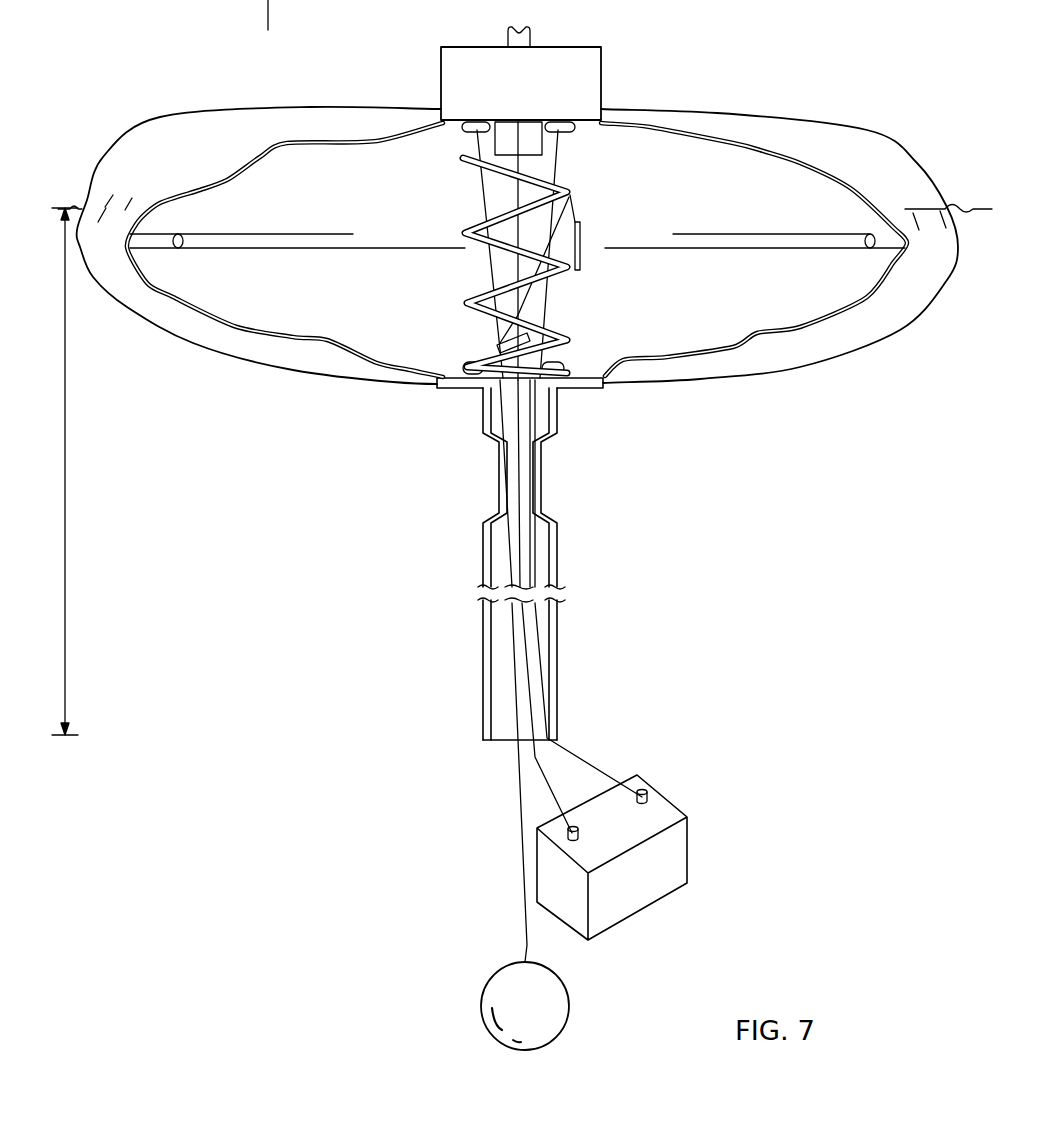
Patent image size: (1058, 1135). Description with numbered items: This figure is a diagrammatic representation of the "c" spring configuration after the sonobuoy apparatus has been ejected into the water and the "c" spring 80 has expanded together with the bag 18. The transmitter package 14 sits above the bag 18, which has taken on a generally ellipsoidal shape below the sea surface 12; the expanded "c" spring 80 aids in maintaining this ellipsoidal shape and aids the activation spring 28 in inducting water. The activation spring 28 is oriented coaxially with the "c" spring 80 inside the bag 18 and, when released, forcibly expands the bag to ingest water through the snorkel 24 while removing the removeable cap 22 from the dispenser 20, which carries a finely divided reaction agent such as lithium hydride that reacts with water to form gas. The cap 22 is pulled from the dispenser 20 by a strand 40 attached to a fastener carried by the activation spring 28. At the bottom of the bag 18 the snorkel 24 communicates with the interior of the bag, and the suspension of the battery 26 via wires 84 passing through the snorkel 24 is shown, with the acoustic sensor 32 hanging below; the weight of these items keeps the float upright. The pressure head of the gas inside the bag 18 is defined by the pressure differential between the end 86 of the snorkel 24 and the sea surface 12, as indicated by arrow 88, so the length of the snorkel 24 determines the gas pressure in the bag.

The transmitter package 14 is at (553, 47).
The bag 18 is at (777, 112).
The sea surface 12 is at (956, 208).
The "c" spring 80 is at (252, 211).
The arrow 88 is at (68, 483).
The removeable cap 22 is at (582, 263).
The strand 40 is at (530, 303).
The activation spring 28 is at (466, 228).
The dispenser 20 is at (552, 156).
The snorkel 24 is at (553, 523).
The end of snorkel 86 is at (490, 740).
The wires 84 is at (590, 765).
The battery 26 is at (687, 817).
The acoustic sensor 32 is at (568, 1000).